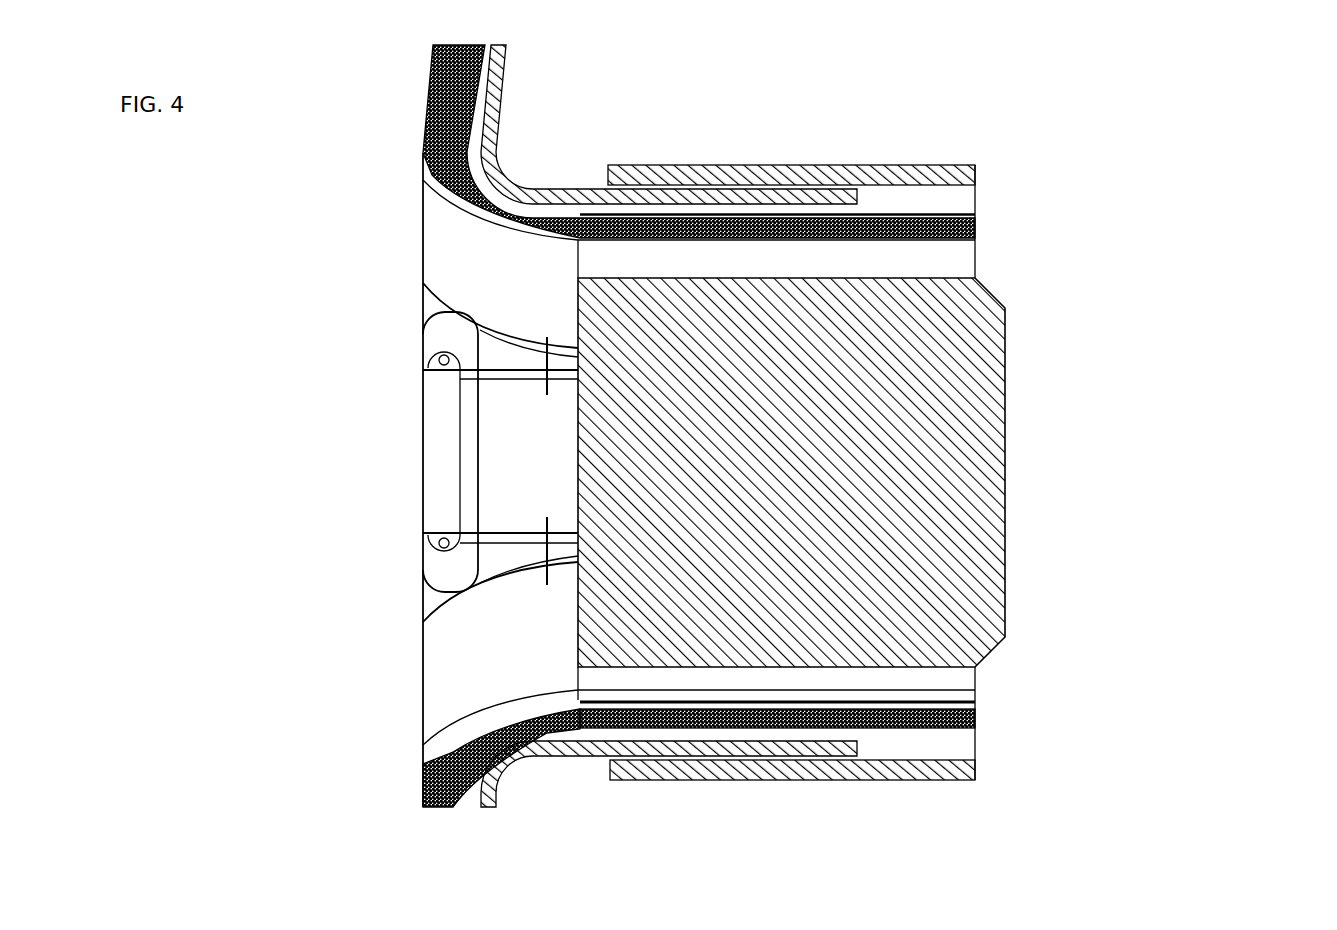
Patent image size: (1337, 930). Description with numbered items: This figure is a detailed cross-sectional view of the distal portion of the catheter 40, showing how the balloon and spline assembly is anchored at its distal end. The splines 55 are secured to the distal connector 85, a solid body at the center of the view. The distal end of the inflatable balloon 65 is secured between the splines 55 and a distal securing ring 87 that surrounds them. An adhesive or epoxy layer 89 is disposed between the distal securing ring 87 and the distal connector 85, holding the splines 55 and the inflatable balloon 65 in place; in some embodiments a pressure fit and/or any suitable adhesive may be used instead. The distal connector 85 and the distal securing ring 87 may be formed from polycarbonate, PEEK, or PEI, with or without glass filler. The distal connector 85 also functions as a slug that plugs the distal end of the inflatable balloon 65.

The catheter 40 is at (1268, 215).
The splines 55 is at (421, 108).
The inflatable balloon 65 is at (556, 188).
The distal connector 85 is at (1005, 455).
The distal securing ring 87 is at (885, 165).
The adhesive or epoxy layer 89 is at (955, 266).